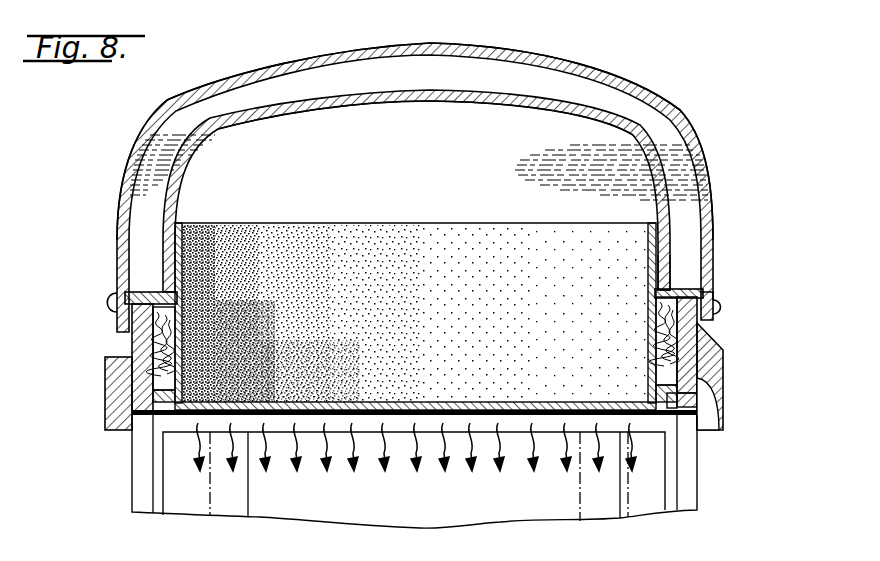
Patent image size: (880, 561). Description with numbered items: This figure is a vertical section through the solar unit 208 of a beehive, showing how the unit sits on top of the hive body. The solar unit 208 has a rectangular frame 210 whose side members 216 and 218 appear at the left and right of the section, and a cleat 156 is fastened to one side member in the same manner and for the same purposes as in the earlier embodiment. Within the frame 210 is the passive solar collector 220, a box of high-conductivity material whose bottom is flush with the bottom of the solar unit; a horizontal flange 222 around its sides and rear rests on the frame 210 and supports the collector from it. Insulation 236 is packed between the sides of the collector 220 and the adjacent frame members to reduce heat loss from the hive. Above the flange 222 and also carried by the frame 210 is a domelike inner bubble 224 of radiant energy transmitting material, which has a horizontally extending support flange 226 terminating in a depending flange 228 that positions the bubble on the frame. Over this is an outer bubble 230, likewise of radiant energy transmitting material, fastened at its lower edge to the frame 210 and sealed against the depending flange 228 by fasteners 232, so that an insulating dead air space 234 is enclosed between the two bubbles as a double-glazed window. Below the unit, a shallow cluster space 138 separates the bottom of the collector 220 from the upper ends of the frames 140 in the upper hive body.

The solar unit 208 is at (547, 60).
The outer bubble 230 is at (322, 62).
The dead air space 234 is at (604, 103).
The inner bubble 224 is at (471, 98).
The passive solar collector 220 is at (375, 219).
The horizontal flange 222 is at (674, 276).
The support flange 226 is at (703, 291).
The depending flange 228 is at (707, 297).
The fasteners 232 is at (116, 305).
The side member 218 is at (701, 348).
The cleat 156 is at (421, 449).
The side member 216 is at (132, 338).
The frame 210 is at (120, 367).
The insulation 236 is at (165, 378).
The frames 140 is at (163, 453).
The cluster space 138 is at (193, 420).